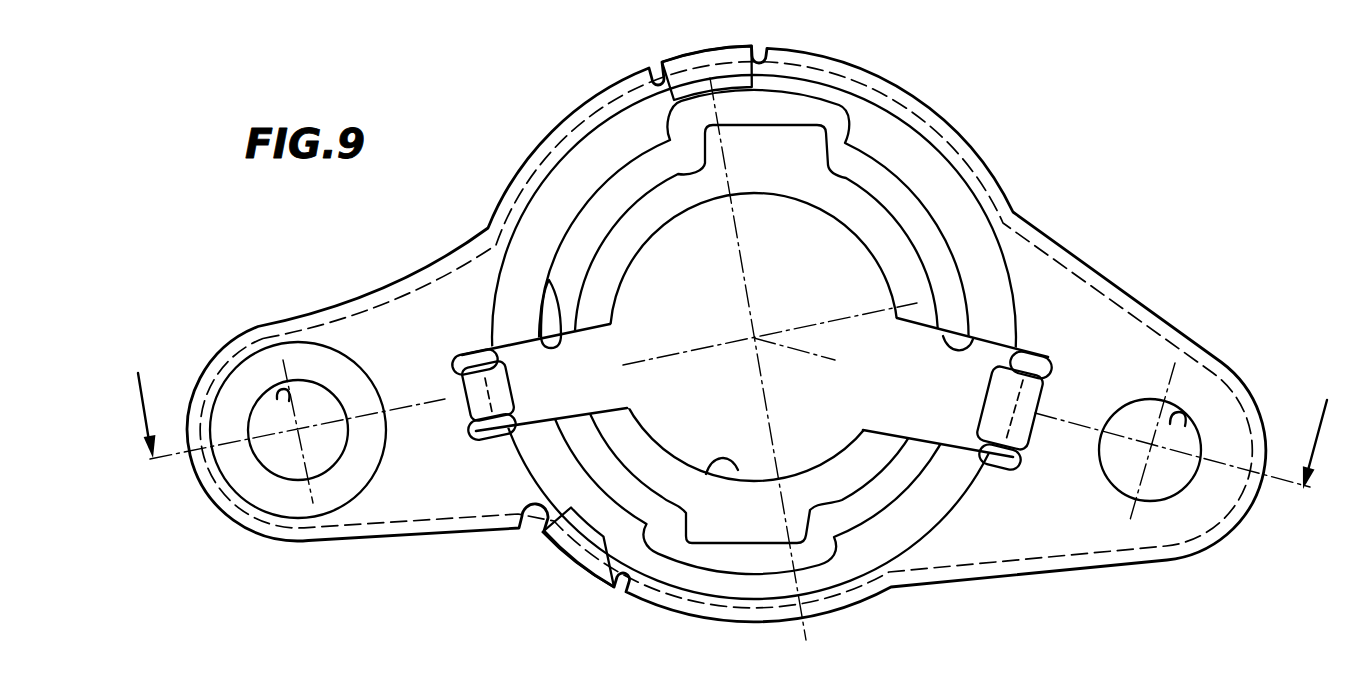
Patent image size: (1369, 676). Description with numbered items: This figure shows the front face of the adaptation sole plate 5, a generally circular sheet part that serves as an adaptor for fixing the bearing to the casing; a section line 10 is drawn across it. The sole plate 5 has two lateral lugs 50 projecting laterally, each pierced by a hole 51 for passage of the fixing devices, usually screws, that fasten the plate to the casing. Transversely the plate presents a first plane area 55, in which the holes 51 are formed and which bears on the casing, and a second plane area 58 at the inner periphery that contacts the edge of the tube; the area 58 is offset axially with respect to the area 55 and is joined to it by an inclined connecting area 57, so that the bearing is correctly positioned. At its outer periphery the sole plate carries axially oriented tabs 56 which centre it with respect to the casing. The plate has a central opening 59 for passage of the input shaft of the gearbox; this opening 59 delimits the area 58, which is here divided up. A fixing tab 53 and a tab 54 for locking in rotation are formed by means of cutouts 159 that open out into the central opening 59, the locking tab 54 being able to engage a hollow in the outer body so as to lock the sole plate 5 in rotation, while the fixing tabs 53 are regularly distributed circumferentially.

The sole plate 5 is at (731, 331).
The section line 10 is at (737, 406).
The lug 50 is at (433, 493).
The hole 51 is at (281, 394).
The fixing tab 53 is at (738, 52).
The tab for locking in rotation 54 is at (488, 386).
The first plane area 55 is at (1020, 515).
The centring tabs 56 is at (596, 112).
The inclined connecting area 57 is at (830, 118).
The second plane area 58 is at (914, 303).
The central opening 59 is at (736, 468).
The cutouts 159 is at (548, 283).